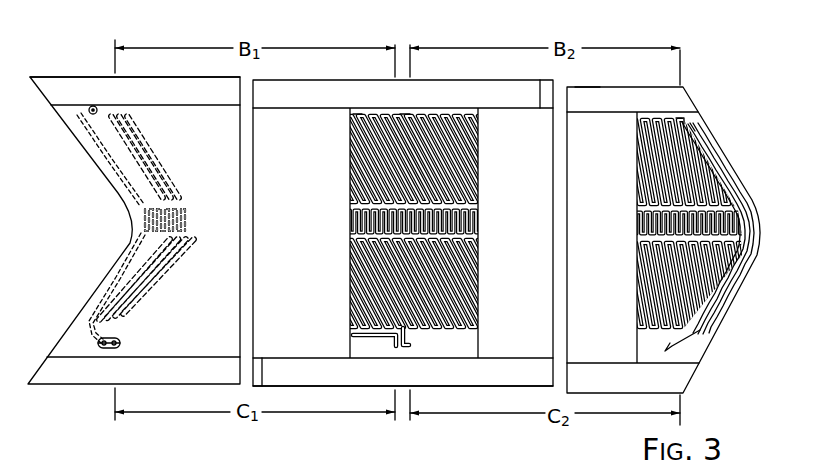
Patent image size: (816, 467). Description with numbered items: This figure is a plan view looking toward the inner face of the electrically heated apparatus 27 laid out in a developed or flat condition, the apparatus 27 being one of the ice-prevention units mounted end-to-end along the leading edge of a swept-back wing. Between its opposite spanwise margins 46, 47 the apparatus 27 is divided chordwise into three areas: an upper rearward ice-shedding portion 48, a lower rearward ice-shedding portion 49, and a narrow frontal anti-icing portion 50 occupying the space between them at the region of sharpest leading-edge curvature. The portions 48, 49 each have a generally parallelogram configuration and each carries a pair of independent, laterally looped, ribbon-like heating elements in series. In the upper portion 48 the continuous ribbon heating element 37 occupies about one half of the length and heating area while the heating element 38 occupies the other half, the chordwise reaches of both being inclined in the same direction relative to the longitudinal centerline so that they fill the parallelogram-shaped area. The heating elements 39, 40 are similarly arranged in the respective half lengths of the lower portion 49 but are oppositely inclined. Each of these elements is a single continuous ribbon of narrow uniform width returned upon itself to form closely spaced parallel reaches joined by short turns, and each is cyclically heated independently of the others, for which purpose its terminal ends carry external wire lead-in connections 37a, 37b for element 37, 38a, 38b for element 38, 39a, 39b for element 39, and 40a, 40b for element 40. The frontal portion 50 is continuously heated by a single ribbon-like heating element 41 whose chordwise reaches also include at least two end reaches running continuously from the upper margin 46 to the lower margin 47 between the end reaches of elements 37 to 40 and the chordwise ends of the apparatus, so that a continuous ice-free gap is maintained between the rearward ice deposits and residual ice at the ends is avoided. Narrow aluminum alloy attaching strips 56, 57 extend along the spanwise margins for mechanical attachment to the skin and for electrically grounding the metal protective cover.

The electrically heated apparatus 27 is at (97, 68).
The ribbon-like heating element 37 is at (147, 145).
The external wire lead-in connection 37a is at (95, 108).
The external wire lead-in connection 37b is at (397, 118).
The ribbon-like heating element 38 is at (473, 162).
The external wire lead-in connection 38a is at (403, 118).
The external wire lead-in connection 38b is at (683, 122).
The ribbon-like heating element 39 is at (180, 278).
The external wire lead-in connection 39a is at (120, 343).
The external wire lead-in connection 39b is at (397, 340).
The ribbon-like heating element 40 is at (475, 302).
The external wire lead-in connection 40a is at (405, 347).
The external wire lead-in connection 40b is at (662, 350).
The continuous ribbon-like heating element 41 is at (90, 133).
The upper spanwise margin 46 is at (583, 85).
The lower spanwise margin 47 is at (306, 389).
The upper rearward ice-shedding portion 48 is at (612, 149).
The lower rearward ice-shedding portion 49 is at (215, 330).
The frontal anti-icing portion 50 is at (535, 239).
The attaching strip 56 is at (547, 100).
The attaching strip 57 is at (260, 370).